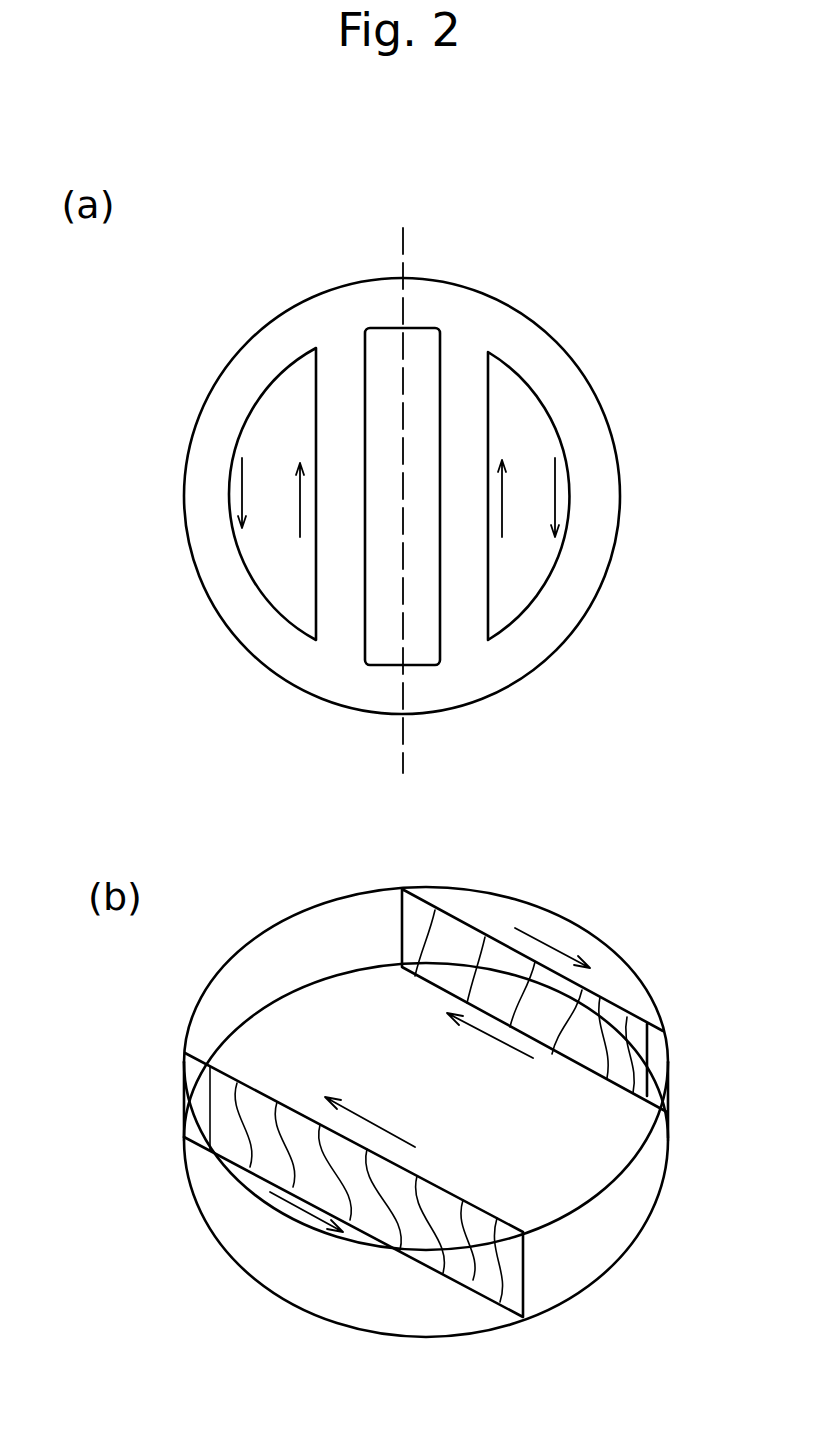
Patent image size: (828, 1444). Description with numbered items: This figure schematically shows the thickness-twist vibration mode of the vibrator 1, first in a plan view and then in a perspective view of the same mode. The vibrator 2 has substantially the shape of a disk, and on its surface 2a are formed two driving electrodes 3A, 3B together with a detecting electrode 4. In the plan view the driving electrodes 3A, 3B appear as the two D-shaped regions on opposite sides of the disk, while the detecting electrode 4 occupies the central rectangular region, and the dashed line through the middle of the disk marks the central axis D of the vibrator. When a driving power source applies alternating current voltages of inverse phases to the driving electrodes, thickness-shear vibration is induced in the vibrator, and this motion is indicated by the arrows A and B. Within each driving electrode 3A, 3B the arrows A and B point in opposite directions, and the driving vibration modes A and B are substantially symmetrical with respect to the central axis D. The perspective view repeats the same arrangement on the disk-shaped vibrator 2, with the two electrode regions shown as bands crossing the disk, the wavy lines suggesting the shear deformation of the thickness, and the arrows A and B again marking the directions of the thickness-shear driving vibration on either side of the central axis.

The vibrator 1 is at (589, 338).
The vibrator 2 is at (426, 785).
The surface 2a is at (462, 303).
The driving electrode 3A is at (540, 437).
The driving electrode 3B is at (282, 388).
The detecting electrode 4 is at (388, 338).
The central axis D is at (407, 246).
The driving vibration mode A is at (242, 490).
The driving vibration mode B is at (300, 511).